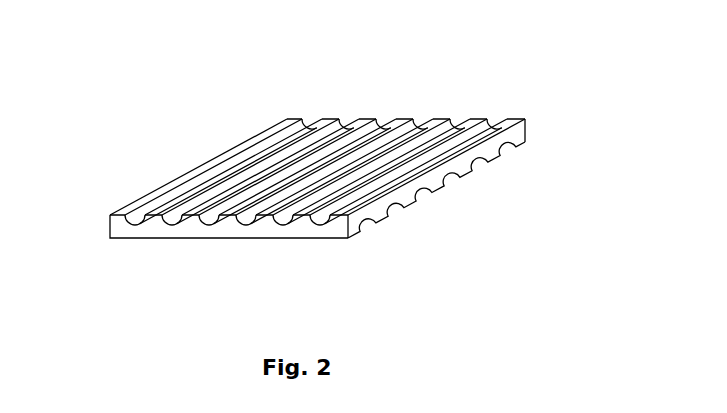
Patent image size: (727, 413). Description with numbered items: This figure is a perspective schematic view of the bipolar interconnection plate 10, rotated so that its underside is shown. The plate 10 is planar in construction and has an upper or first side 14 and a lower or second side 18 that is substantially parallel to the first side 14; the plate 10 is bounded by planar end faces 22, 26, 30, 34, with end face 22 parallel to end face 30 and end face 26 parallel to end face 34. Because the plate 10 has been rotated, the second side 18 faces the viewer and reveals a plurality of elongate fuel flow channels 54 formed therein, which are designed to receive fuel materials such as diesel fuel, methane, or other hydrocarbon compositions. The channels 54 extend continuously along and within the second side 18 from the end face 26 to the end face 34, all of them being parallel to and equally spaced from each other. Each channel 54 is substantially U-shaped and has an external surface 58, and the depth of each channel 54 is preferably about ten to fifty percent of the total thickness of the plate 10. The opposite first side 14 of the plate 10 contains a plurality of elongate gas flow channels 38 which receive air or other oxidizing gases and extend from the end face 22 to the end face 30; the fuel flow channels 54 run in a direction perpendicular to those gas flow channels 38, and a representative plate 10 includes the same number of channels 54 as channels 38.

The bipolar interconnection plate 10 is at (559, 96).
The first side 14 is at (350, 236).
The second side 18 is at (480, 117).
The end face 22 is at (524, 138).
The end face 26 is at (256, 229).
The end face 30 is at (112, 214).
The end face 34 is at (410, 121).
The gas flow channels 38 is at (452, 182).
The fuel flow channels 54 is at (343, 127).
The external surface 58 is at (292, 130).